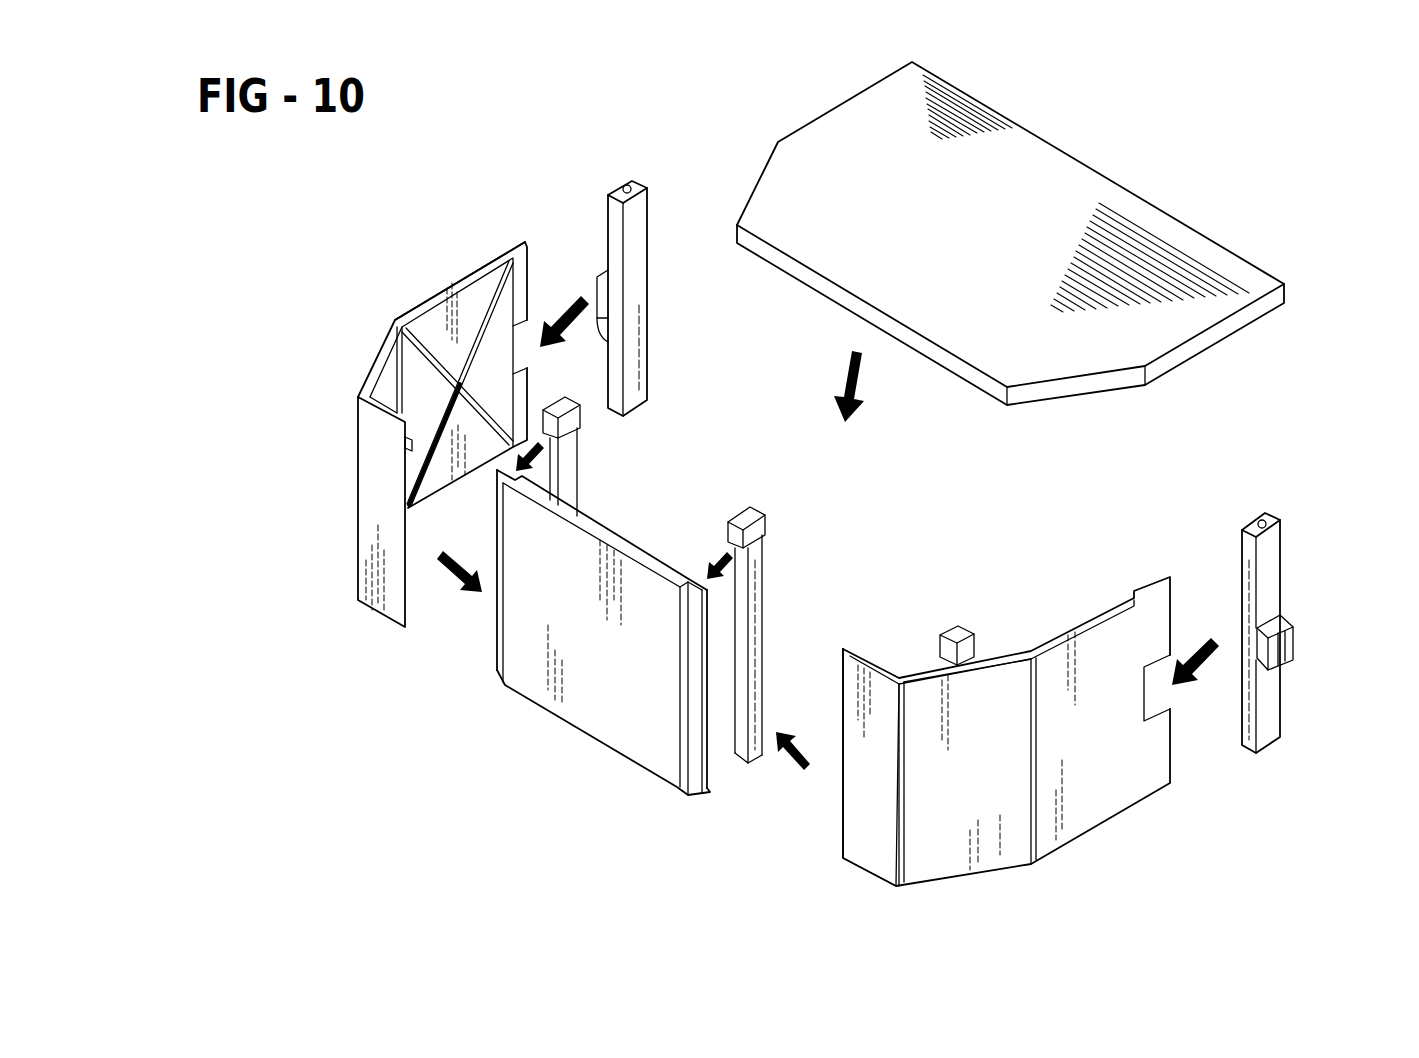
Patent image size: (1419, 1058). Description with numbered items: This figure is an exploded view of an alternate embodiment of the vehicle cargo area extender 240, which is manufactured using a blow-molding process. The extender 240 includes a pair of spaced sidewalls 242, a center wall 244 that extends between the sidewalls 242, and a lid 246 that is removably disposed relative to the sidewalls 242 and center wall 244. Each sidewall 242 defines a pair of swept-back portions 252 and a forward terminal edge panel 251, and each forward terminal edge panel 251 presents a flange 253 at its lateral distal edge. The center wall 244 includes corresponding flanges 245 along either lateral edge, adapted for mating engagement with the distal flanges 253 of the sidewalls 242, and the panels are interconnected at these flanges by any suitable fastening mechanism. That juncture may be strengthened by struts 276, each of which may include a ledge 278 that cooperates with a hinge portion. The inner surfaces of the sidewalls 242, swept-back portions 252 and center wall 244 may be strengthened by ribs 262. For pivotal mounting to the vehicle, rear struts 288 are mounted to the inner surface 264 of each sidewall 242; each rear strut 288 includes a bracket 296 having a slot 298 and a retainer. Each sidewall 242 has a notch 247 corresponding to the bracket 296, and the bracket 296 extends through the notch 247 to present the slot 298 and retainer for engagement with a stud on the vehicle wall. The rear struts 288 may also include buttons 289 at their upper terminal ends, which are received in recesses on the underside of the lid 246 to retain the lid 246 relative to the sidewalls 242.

The vehicle cargo area extender 240 is at (698, 148).
The sidewall 242 is at (423, 288).
The center wall 244 is at (614, 686).
The flange 245 is at (497, 652).
The lid 246 is at (1048, 194).
The notch 247 is at (536, 322).
The forward terminal edge panel 251 is at (372, 580).
The swept-back portion 252 is at (380, 362).
The flange 253 is at (410, 448).
The rib 262 is at (435, 350).
The inner surface 264 is at (478, 437).
The strut 276 is at (573, 487).
The ledge 278 is at (562, 445).
The rear strut 288 is at (637, 238).
The button 289 is at (626, 184).
The bracket 296 is at (597, 330).
The slot 298 is at (1285, 661).